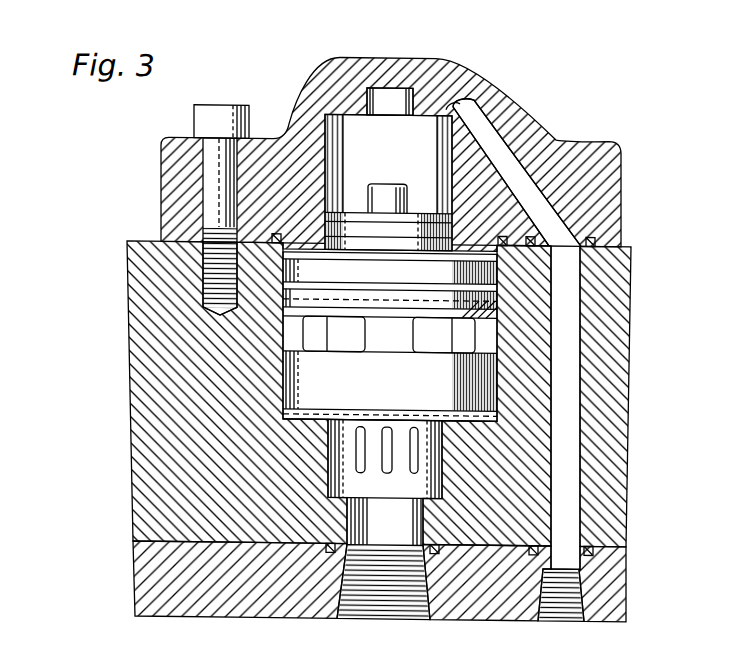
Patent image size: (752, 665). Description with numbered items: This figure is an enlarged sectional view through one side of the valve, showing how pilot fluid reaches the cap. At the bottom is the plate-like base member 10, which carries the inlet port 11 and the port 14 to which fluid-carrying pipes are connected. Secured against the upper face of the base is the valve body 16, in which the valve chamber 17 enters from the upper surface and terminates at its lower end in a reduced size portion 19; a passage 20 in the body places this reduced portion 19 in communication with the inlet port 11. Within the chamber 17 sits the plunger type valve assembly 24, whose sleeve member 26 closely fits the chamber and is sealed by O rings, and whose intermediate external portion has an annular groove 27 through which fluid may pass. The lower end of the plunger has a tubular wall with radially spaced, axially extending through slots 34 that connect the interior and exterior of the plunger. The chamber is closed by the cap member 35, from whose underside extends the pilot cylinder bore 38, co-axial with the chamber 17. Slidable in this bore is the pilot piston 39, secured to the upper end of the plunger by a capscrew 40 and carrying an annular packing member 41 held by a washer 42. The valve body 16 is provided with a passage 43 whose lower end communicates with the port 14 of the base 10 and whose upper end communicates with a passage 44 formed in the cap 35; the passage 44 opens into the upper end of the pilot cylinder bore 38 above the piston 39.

The base member 10 is at (180, 590).
The inlet port 11 is at (358, 606).
The port 14 is at (577, 612).
The valve body 16 is at (127, 415).
The valve chamber 17 is at (283, 320).
The reduced size portion 19 is at (330, 480).
The passage 20 is at (418, 528).
The valve assembly 24 is at (497, 378).
The sleeve member 26 is at (497, 349).
The annular groove 27 is at (283, 335).
The through slots 34 is at (417, 460).
The cap member 35 is at (321, 50).
The pilot cylinder bore 38 is at (330, 136).
The pilot piston 39 is at (453, 234).
The capscrew 40 is at (385, 190).
The annular packing member 41 is at (445, 208).
The washer 42 is at (347, 208).
The passage 43 is at (578, 461).
The passage 44 is at (478, 127).